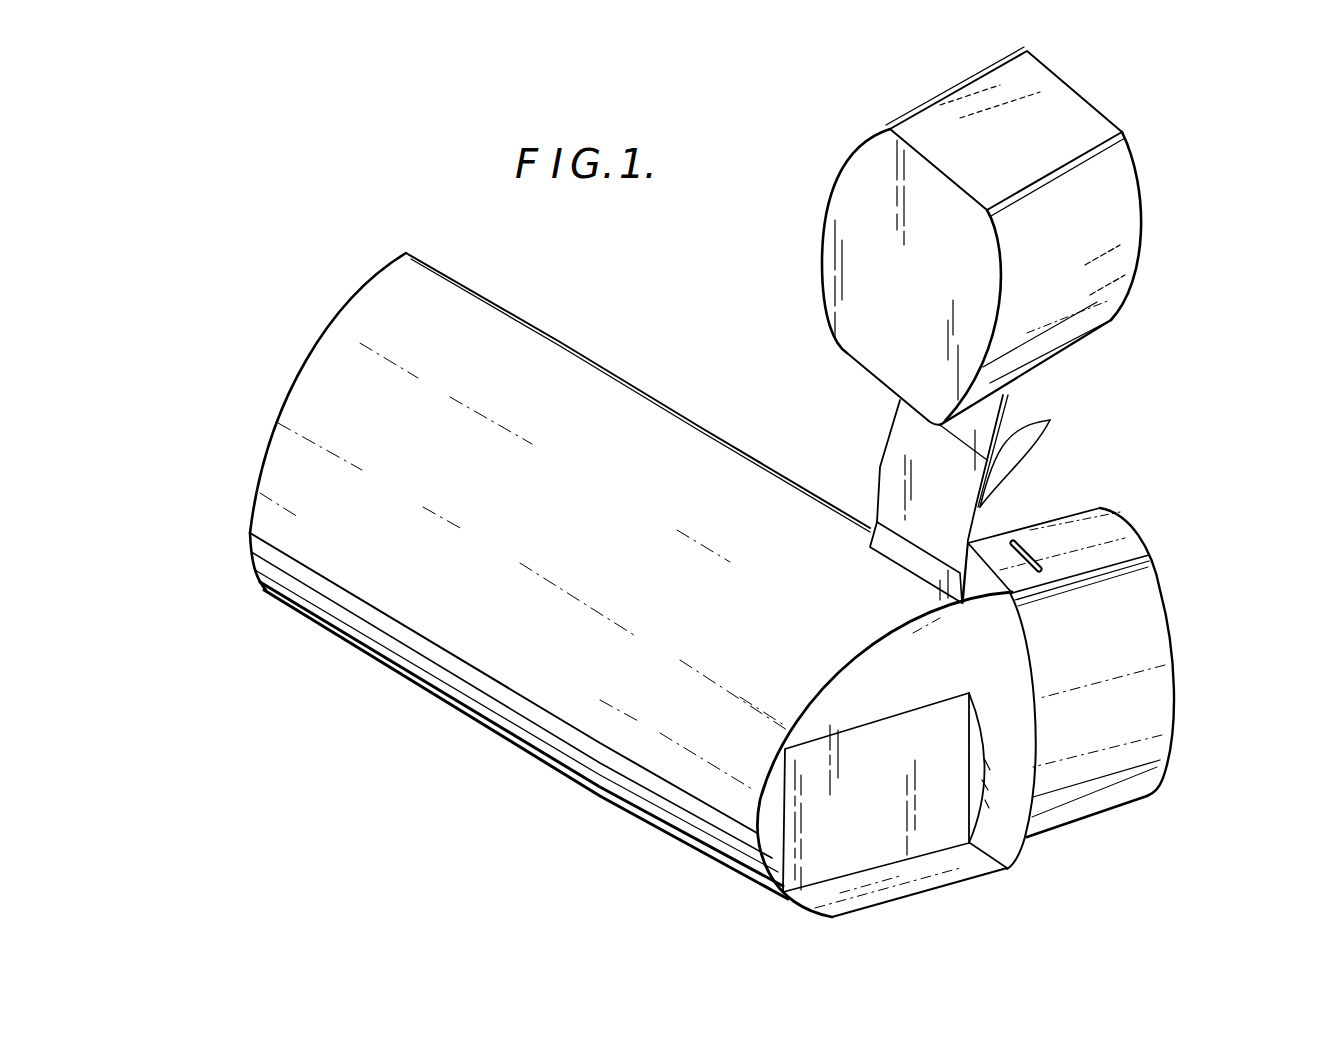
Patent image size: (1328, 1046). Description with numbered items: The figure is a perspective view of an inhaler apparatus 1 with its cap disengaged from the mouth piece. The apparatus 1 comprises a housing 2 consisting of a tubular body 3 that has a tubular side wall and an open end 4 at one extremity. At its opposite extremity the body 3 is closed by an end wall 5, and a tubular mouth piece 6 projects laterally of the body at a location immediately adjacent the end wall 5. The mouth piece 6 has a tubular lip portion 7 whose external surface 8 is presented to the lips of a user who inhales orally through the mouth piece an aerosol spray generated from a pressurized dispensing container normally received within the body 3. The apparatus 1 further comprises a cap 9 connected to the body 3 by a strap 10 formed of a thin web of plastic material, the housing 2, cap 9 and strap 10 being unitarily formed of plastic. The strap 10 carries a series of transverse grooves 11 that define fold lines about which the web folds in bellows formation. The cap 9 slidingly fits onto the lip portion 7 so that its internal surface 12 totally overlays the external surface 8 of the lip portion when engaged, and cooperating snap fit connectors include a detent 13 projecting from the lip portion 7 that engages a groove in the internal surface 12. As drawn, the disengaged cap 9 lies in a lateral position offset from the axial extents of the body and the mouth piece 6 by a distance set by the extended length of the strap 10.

The apparatus 1 is at (238, 385).
The housing 2 is at (660, 802).
The tubular body 3 is at (397, 662).
The open end 4 is at (320, 348).
The end wall 5 is at (892, 850).
The tubular mouth piece 6 is at (1216, 702).
The tubular lip portion 7 is at (1140, 773).
The side wall of end cap 8 is at (1117, 627).
The cap 9 is at (806, 122).
The strap 10 is at (887, 467).
The transverse grooves 11 is at (1052, 420).
The internal surface 12 is at (1154, 202).
The detent 13 is at (1015, 541).